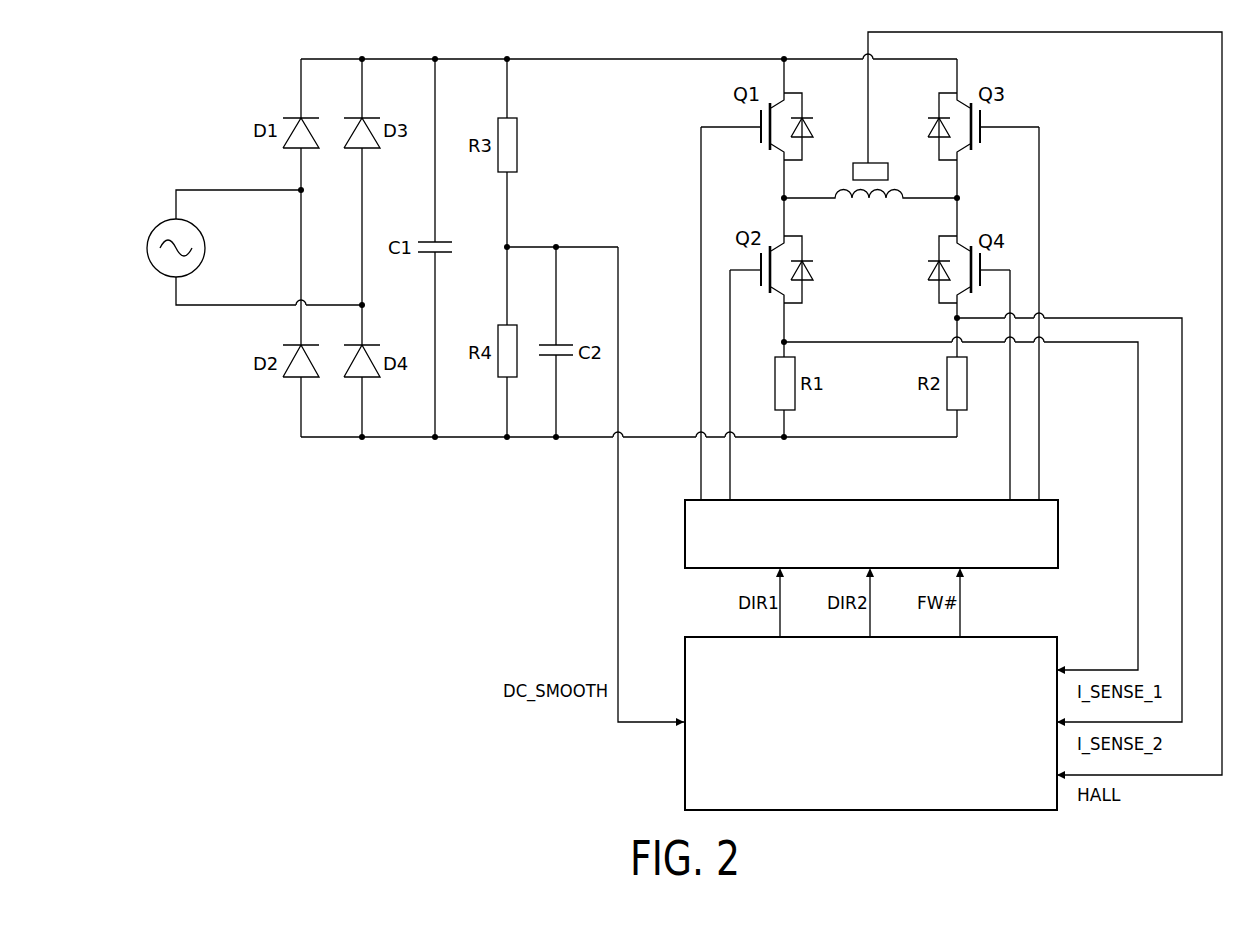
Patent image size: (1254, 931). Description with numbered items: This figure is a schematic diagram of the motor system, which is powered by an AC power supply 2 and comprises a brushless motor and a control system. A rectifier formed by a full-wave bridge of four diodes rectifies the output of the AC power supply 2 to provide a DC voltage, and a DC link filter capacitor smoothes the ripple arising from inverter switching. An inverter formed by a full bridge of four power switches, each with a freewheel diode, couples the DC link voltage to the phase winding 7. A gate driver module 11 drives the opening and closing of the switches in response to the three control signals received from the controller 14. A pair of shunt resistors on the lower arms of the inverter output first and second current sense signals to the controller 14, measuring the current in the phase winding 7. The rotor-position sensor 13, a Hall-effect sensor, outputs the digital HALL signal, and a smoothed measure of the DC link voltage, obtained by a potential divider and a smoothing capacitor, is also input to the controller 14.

The AC power supply 2 is at (147, 248).
The phase winding 7 is at (868, 204).
The gate driver module 11 is at (1030, 568).
The rotor-position sensor 13 is at (880, 160).
The controller 14 is at (1042, 810).